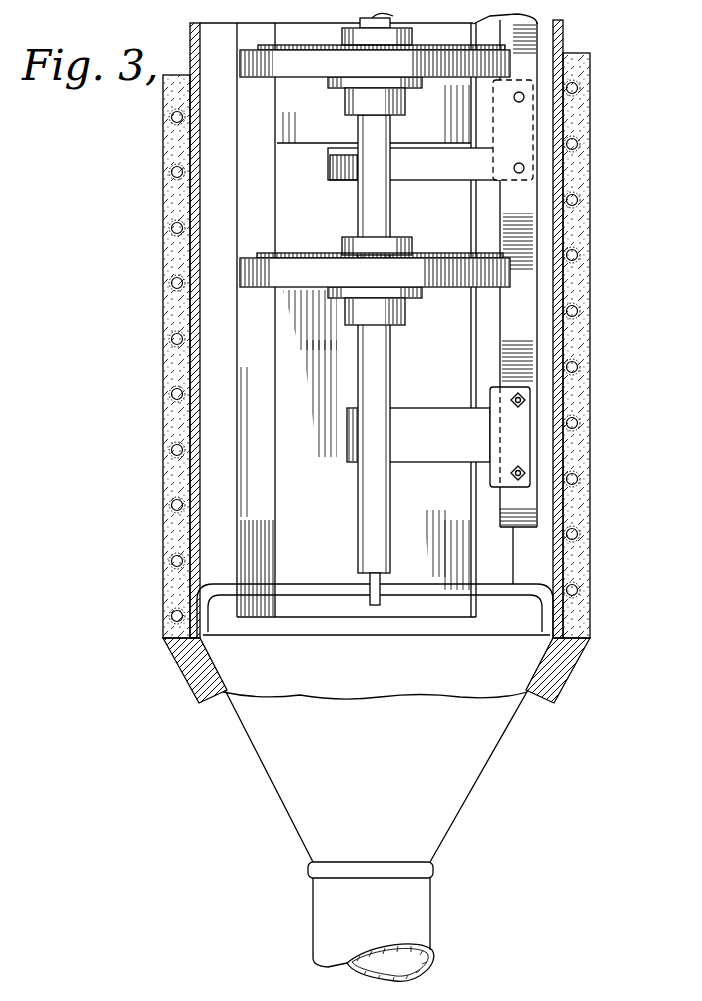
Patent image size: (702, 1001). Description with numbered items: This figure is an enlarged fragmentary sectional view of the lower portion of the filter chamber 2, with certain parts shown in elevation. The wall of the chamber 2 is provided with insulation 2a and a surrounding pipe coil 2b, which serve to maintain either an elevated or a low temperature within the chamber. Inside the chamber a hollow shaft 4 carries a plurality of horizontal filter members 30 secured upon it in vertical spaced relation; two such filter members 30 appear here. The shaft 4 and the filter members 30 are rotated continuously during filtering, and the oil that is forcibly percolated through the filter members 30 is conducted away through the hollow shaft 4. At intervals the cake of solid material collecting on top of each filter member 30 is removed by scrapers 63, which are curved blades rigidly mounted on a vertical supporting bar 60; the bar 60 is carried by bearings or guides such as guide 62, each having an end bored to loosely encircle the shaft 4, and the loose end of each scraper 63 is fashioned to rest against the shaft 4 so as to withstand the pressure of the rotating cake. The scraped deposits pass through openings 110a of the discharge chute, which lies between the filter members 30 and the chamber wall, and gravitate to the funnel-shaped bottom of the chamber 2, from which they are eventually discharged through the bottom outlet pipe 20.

The filter chamber 2 is at (556, 348).
The insulation 2a is at (172, 416).
The pipe coil 2b is at (170, 451).
The hollow shaft 4 is at (370, 210).
The bottom outlet pipe 20 is at (322, 893).
The filter members 30 is at (268, 67).
The vertical supporting bar 60 is at (537, 220).
The bearing or guide 62 is at (417, 410).
The scrapers 63 is at (417, 182).
The openings 110a is at (280, 192).